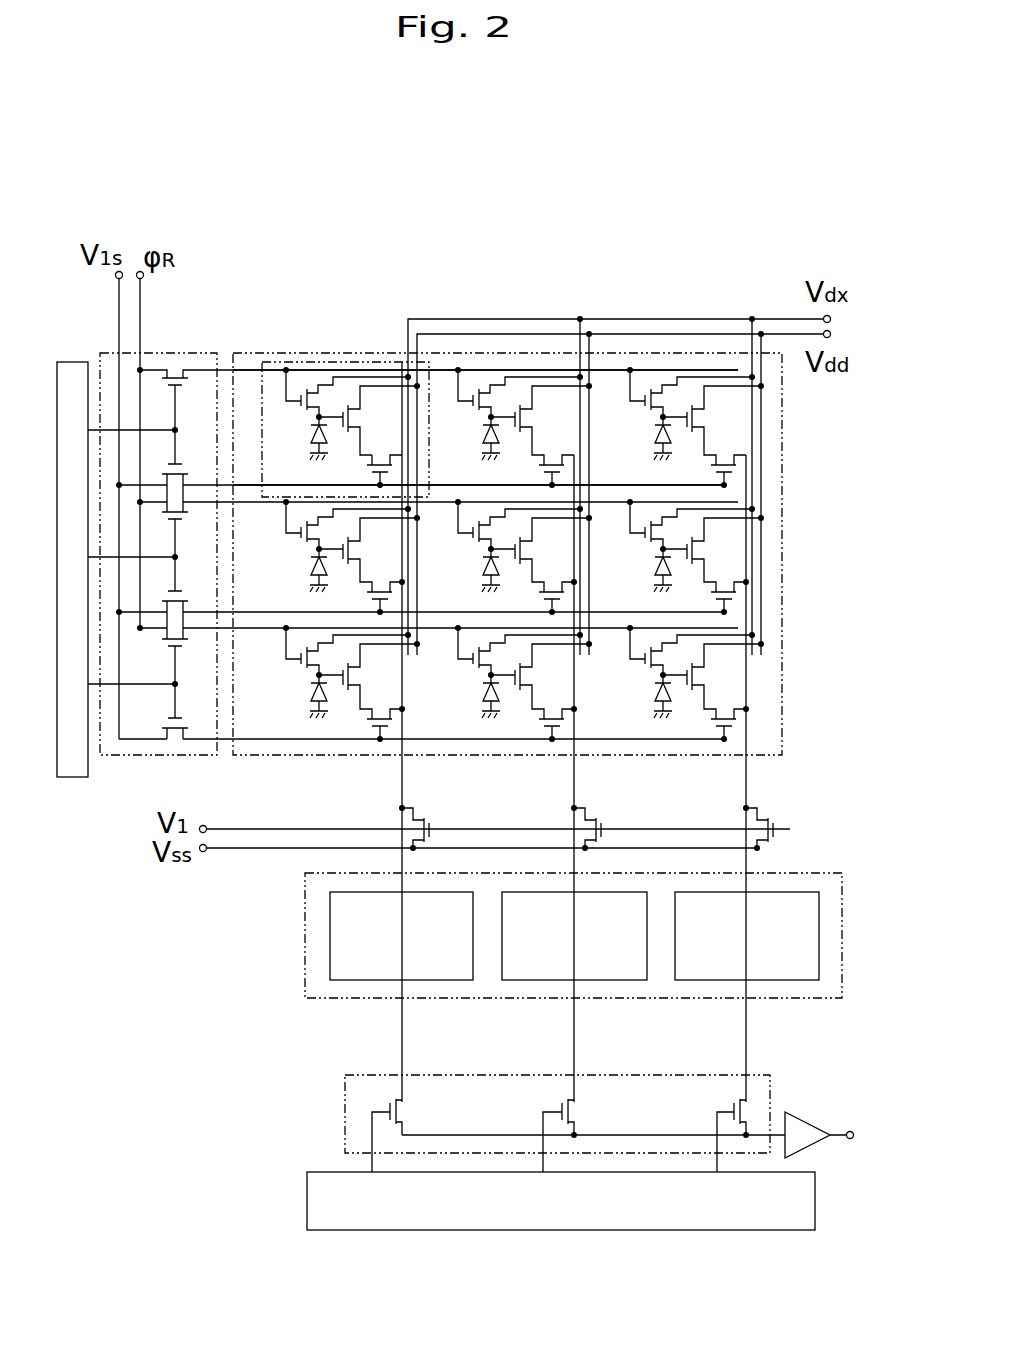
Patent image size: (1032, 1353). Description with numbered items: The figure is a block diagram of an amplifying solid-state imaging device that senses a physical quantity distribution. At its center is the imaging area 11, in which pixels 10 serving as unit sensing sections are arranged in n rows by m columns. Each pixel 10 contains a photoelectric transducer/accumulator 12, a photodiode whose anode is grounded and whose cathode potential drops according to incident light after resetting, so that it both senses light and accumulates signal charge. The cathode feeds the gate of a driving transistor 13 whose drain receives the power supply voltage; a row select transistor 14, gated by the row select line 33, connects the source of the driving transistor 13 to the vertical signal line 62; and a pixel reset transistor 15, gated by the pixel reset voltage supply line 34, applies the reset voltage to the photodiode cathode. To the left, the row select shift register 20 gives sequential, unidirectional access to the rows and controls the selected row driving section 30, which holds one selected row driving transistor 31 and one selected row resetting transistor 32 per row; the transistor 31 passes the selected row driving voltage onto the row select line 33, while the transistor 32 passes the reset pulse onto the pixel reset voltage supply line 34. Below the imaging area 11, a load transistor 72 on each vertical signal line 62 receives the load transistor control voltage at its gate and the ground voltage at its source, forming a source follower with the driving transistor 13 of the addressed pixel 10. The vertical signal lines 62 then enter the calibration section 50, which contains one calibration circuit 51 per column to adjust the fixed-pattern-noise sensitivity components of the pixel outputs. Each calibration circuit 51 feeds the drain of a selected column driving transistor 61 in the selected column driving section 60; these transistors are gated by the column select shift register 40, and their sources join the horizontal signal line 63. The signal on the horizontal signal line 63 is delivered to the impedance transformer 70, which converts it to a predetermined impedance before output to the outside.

The pixel 10 is at (297, 347).
The imaging area 11 is at (255, 755).
The photoelectric transducer/accumulator 12 is at (310, 437).
The driving transistor 13 is at (355, 404).
The row select transistor 14 is at (380, 462).
The pixel reset transistor 15 is at (312, 392).
The row select shift register 20 is at (73, 778).
The selected row driving section 30 is at (122, 753).
The selected row driving transistor 31 is at (183, 462).
The selected row resetting transistor 32 is at (178, 363).
The row select line 33 is at (252, 485).
The pixel reset voltage supply line 34 is at (245, 363).
The column select shift register 40 is at (730, 1232).
The calibration section 50 is at (305, 960).
The calibration circuit 51 is at (330, 912).
The selected column driving section 60 is at (345, 1112).
The selected column driving transistor 61 is at (387, 1105).
The vertical signal line 62 is at (402, 788).
The horizontal signal line 63 is at (493, 1135).
The impedance transformer 70 is at (805, 1115).
The load transistor 72 is at (430, 820).